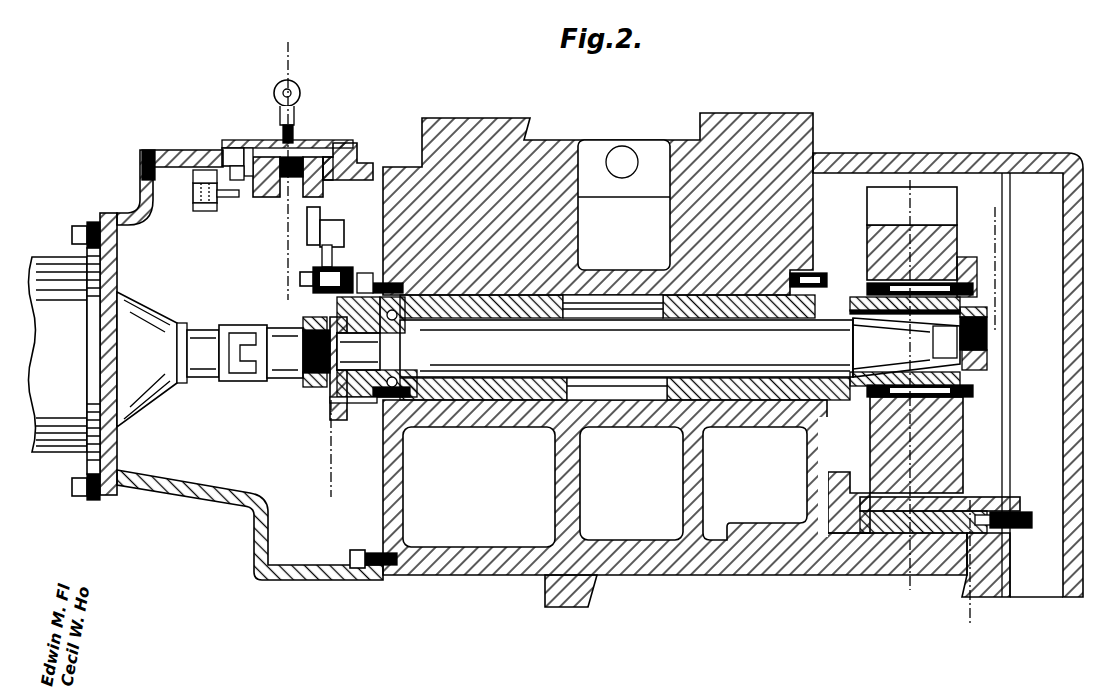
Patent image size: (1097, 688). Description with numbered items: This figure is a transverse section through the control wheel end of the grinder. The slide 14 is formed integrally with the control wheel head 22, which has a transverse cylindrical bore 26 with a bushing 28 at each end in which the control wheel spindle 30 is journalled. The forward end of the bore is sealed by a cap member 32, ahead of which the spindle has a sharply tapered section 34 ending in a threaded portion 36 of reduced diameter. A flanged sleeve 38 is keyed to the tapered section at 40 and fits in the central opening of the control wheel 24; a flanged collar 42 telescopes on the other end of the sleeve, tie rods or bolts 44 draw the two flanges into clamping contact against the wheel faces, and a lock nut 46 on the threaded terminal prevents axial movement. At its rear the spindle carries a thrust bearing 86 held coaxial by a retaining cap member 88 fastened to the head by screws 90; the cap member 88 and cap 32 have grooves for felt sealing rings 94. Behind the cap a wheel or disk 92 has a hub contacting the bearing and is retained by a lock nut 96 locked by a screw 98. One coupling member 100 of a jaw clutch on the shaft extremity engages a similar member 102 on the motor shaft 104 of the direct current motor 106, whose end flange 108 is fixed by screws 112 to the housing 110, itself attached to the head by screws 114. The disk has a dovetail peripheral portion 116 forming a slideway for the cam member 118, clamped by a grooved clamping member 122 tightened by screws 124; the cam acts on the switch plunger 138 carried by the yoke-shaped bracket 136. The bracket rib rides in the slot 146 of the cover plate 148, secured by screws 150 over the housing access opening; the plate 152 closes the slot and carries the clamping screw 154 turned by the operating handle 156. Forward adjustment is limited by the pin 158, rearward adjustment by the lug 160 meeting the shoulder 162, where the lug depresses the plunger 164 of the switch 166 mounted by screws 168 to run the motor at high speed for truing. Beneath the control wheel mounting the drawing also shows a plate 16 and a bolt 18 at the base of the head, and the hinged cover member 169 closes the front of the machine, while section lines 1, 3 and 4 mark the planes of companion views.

The section line 1- 1 is at (997, 203).
The section line 3- 3 is at (905, 180).
The section line 4- 4 is at (303, 42).
The slide 14 is at (846, 572).
The plate 16 is at (1000, 497).
The bolt 18 is at (1000, 530).
The control wheel head 22 is at (808, 140).
The control wheel 24 is at (950, 470).
The transverse cylindrical bore 26 is at (658, 402).
The bushing 28 is at (510, 402).
The control wheel shaft or spindle 30 is at (626, 347).
The cap member 32 is at (828, 272).
The tapered section 34 is at (906, 347).
The threaded portion 36 is at (988, 333).
The flanged sleeve 38 is at (843, 417).
The key 40 is at (848, 322).
The flanged collar 42 is at (978, 265).
The tie rods or bolts 44 is at (975, 288).
The lock nut 46 is at (988, 358).
The thrust bearing 86 is at (405, 325).
The retaining cap member 88 is at (352, 420).
The screws 90 is at (372, 283).
The wheel or disk 92 is at (318, 388).
The sealing rings 94 is at (345, 403).
The lock nut 96 is at (305, 378).
The screw 98 is at (320, 316).
The coupling member 100 is at (262, 380).
The coupling member 102 is at (230, 325).
The motor shaft 104 is at (196, 378).
The direct current motor 106 is at (58, 354).
The end flange 108 is at (87, 288).
The housing 110 is at (140, 495).
The screws 112 is at (72, 235).
The screws 114 is at (352, 550).
The dovetail peripheral portion 116 is at (330, 420).
The cam member 118 is at (320, 272).
The clamping member 122 is at (345, 266).
The screws 124 is at (300, 279).
The yoke-shaped bracket 136 is at (307, 230).
The actuating member or plunger 138 is at (340, 232).
The slot 146 is at (233, 147).
The cover or closure plate 148 is at (358, 150).
The screws 150 is at (146, 152).
The plate 152 is at (335, 140).
The clamping screw 154 is at (288, 180).
The operating handle 156 is at (298, 87).
The pin 158 is at (330, 165).
The lug 160 is at (240, 182).
The shoulder 162 is at (262, 130).
The operating member or plunger 164 is at (226, 198).
The switch 166 is at (193, 188).
The screws 168 is at (200, 212).
The hinged cover member 169 is at (1012, 152).